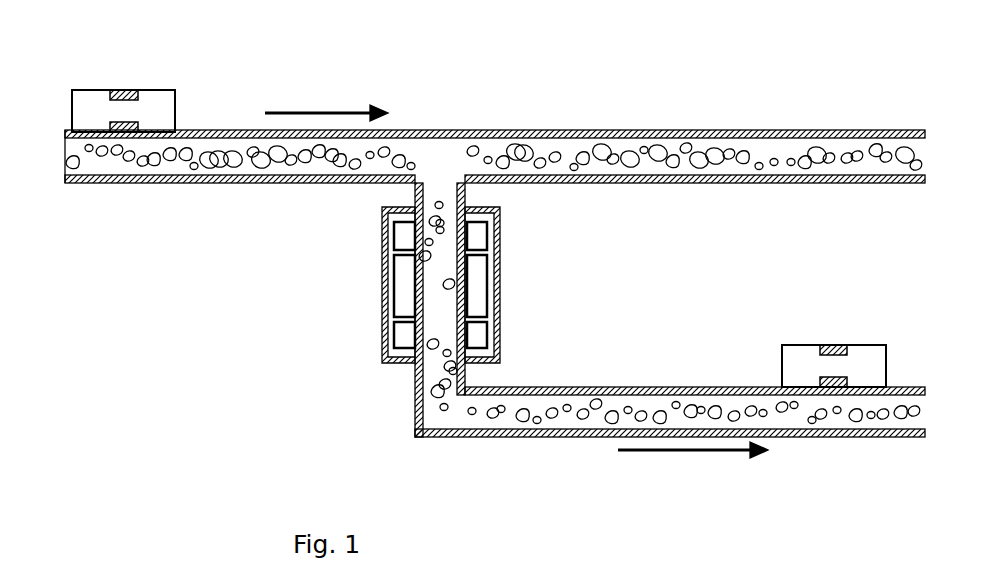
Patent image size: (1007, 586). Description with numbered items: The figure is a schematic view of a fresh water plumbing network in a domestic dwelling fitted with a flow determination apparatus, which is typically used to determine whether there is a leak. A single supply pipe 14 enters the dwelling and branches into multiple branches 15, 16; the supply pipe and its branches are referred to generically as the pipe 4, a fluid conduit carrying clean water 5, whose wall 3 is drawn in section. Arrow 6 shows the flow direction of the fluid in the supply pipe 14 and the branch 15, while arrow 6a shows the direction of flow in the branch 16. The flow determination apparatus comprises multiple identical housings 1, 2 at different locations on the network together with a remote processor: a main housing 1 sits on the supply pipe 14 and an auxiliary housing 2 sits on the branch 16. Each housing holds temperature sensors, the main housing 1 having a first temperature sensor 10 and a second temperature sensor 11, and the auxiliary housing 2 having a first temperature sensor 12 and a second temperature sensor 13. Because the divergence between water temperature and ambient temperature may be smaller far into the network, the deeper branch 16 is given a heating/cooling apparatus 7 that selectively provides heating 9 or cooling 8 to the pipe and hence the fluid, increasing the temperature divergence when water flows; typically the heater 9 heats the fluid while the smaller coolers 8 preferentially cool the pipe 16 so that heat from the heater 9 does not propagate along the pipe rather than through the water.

The main housing 1 is at (125, 69).
The auxiliary housing 2 is at (854, 384).
The wall of transport conduit 3 is at (477, 191).
The pipe 4 is at (128, 179).
The clean water 5 is at (68, 158).
The arrow 6 is at (323, 111).
The arrow 6a is at (678, 453).
The heating/cooling apparatus 7 is at (501, 283).
The coolers 8 is at (372, 232).
The heater 9 is at (372, 286).
The first temperature sensor 10 is at (118, 126).
The second temperature sensor 11 is at (128, 91).
The first temperature sensor 12 is at (838, 389).
The second temperature sensor 13 is at (833, 346).
The supply pipe 14 is at (98, 179).
The branch 15 is at (636, 183).
The branch 16 is at (568, 434).